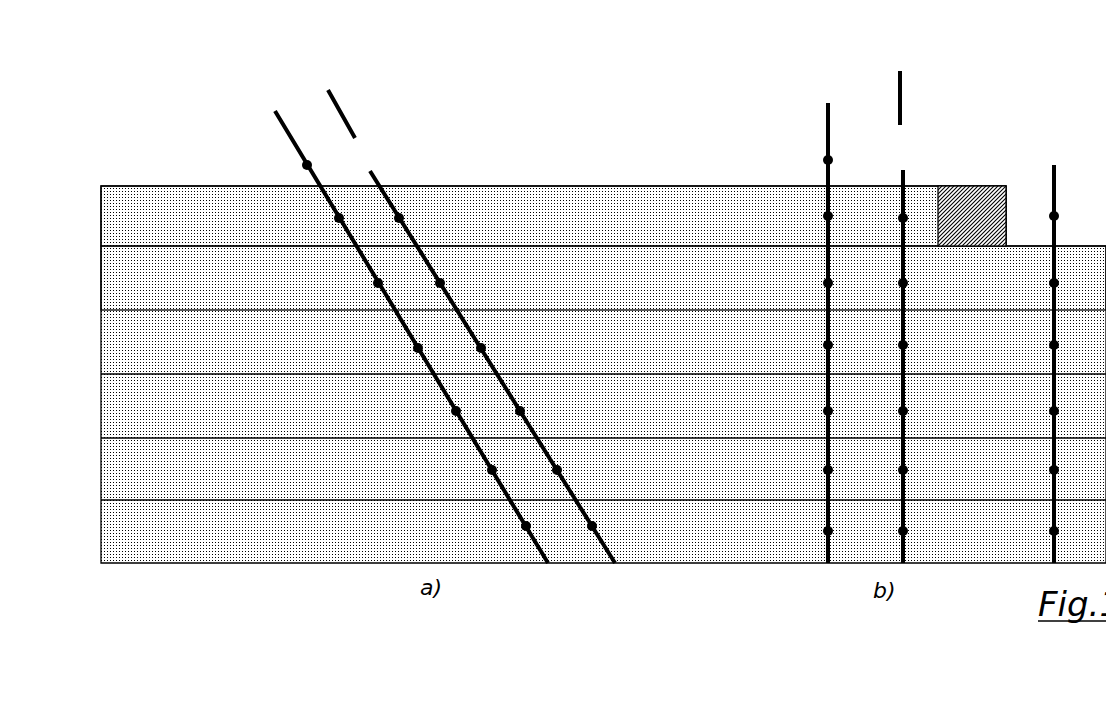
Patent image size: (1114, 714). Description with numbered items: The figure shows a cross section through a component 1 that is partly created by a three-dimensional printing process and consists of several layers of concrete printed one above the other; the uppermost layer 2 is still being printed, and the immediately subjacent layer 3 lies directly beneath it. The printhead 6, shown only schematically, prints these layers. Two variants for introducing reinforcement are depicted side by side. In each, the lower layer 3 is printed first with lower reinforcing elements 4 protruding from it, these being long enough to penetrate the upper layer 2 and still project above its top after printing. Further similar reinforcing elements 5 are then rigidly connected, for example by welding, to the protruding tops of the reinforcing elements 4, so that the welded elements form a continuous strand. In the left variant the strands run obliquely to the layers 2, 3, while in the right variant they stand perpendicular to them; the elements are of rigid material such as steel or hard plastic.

The component 1 is at (641, 141).
The uppermost layer 2 is at (649, 230).
The subjacent layer 3 is at (648, 294).
The lower reinforcing elements 4 is at (312, 168).
The reinforcing elements 5 is at (337, 82).
The printhead 6 is at (977, 177).